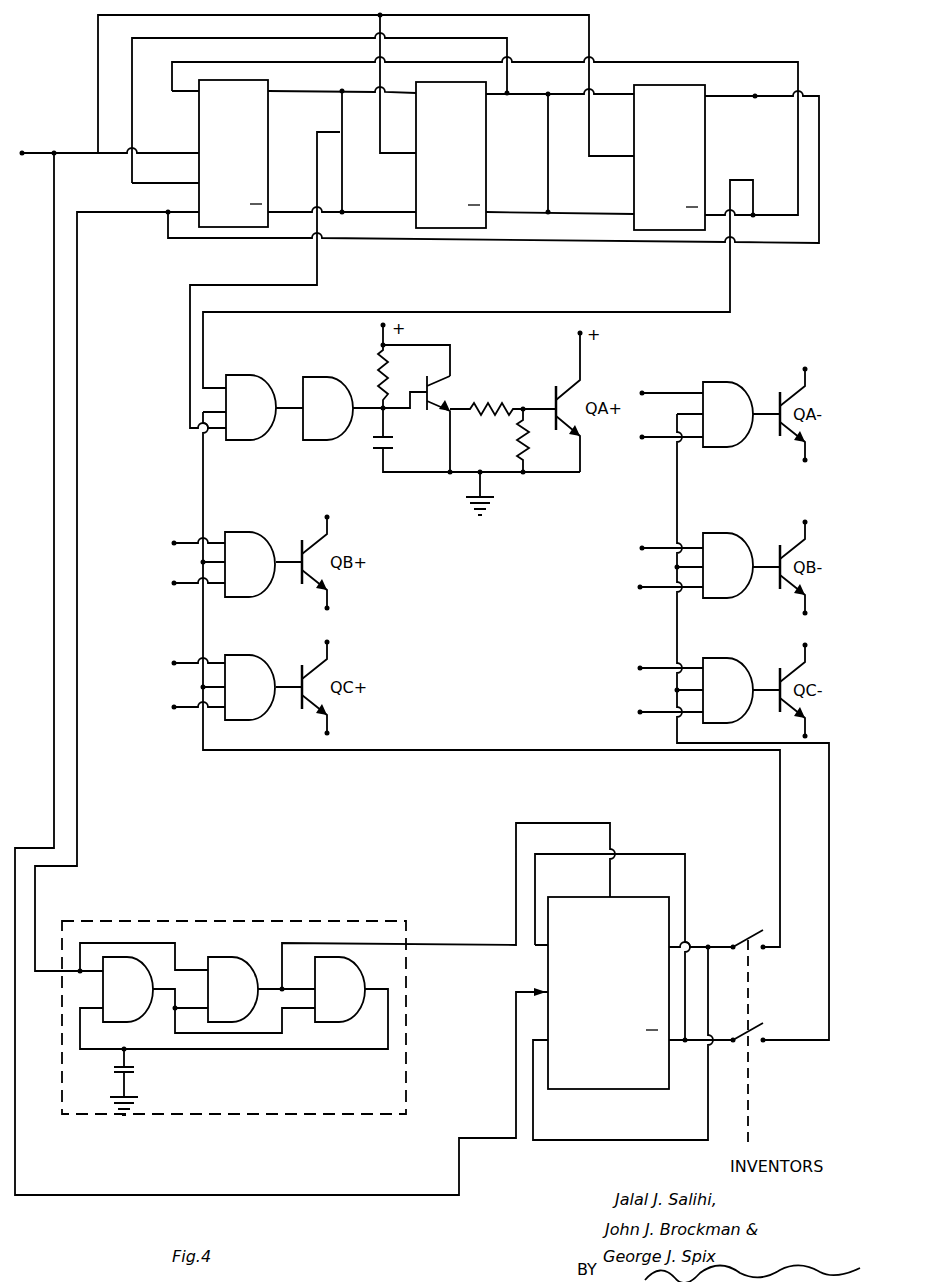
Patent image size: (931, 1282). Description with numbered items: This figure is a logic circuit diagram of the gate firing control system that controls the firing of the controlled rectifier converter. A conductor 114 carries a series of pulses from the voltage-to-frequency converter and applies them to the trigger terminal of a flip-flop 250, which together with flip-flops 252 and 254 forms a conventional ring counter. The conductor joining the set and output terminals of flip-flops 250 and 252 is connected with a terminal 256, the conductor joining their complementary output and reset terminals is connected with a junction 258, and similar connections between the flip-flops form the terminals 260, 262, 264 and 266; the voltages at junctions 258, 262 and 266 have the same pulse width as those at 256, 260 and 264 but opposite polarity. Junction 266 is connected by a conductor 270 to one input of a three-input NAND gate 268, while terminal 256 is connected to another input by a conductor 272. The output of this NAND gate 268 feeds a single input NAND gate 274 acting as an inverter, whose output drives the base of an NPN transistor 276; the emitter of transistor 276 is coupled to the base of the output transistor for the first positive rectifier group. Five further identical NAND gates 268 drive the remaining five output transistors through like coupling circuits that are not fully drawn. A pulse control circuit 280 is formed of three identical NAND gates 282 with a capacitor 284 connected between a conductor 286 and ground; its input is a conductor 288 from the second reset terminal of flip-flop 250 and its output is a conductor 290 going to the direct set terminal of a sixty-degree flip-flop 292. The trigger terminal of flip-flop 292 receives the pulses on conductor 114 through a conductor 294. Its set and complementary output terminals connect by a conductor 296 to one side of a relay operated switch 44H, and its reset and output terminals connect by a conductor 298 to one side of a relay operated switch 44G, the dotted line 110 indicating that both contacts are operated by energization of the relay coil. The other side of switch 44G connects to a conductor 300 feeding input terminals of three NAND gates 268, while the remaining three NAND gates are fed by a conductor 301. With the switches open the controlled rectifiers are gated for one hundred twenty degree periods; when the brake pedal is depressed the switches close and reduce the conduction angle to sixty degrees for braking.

The conductor 114 is at (33, 153).
The flip-flop 250 is at (264, 130).
The flip-flop 252 is at (473, 143).
The flip-flop 254 is at (698, 158).
The terminal 256 is at (338, 132).
The junction 258 is at (342, 210).
The terminal 260 is at (548, 133).
The terminal 262 is at (548, 178).
The terminal 264 is at (755, 96).
The terminal 266 is at (753, 180).
The three-input NAND gate 268 is at (245, 375).
The conductor 270 is at (473, 312).
The conductor 272 is at (230, 285).
The single input NAND gate 274 is at (320, 377).
The NPN transistor 276 is at (445, 392).
The pulse control circuit 280 is at (205, 921).
The NAND gate 282 is at (117, 957).
The capacitor 284 is at (133, 1068).
The conductor 286 is at (220, 1049).
The conductor 288 is at (77, 775).
The conductor 290 is at (430, 945).
The flip-flop 292 is at (627, 1070).
The conductor 294 is at (15, 1160).
The conductor 296 is at (697, 1045).
The conductor 298 is at (702, 940).
The conductor 300 is at (405, 750).
The conductor 301 is at (829, 872).
The relay operated switch 44G is at (752, 930).
The relay operated switch 44H is at (752, 1030).
The dotted line 110 is at (752, 1112).